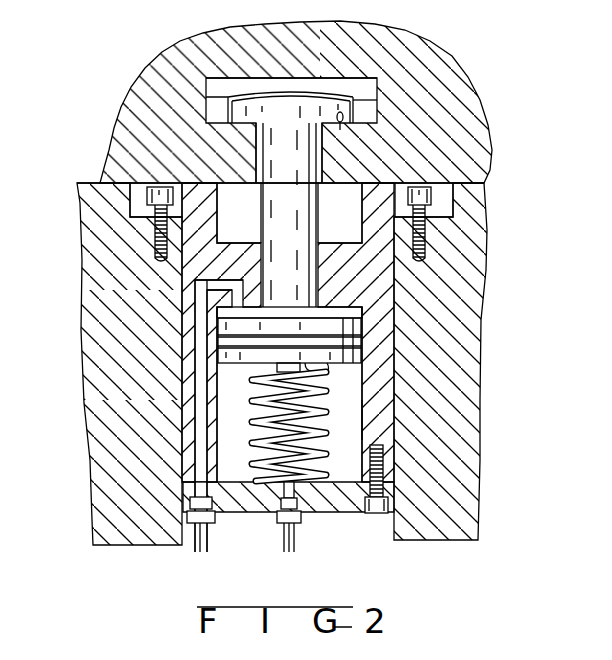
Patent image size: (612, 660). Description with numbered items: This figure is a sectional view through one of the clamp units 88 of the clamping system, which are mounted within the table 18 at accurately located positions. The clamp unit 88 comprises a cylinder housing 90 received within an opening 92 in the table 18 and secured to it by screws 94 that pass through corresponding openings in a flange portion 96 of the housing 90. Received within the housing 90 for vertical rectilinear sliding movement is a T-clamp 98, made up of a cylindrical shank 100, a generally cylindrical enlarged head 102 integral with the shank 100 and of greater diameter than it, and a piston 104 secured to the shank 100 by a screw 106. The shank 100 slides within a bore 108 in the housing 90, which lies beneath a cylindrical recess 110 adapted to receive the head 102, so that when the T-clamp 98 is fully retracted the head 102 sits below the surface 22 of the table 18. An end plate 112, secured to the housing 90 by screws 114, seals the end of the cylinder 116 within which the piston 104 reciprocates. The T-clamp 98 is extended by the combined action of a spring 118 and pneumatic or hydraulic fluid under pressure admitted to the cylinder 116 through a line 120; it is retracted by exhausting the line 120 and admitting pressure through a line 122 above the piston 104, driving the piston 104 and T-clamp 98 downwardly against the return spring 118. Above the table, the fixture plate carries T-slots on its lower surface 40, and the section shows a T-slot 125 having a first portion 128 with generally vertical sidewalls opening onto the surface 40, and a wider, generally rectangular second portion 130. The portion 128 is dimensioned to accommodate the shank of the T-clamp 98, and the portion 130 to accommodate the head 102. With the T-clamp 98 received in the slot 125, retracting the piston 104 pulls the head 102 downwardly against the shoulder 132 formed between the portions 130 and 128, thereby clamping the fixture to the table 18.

The table 18 is at (87, 365).
The surface of table 22 is at (483, 185).
The lower surface of fixture plate 40 is at (112, 187).
The clamp unit 88 is at (388, 177).
The cylinder housing 90 is at (385, 362).
The opening in table 92 is at (389, 419).
The screws 94 is at (158, 193).
The flange portion of housing 96 is at (134, 198).
The T-clamp 98 is at (322, 157).
The cylindrical shank 100 is at (280, 232).
The enlarged head 102 is at (323, 107).
The piston 104 is at (366, 330).
The screw 106 is at (217, 375).
The bore 108 is at (311, 274).
The cylindrical recess 110 is at (222, 193).
The end plate 112 is at (243, 487).
The screws 114 is at (377, 507).
The cylinder 116 is at (356, 420).
The return spring 118 is at (310, 437).
The line 120 is at (292, 532).
The line 122 is at (200, 450).
The T-slot 125 is at (367, 100).
The first portion of T-slot 128 is at (260, 148).
The second portion of T-slot 130 is at (212, 98).
The shoulder 132 is at (340, 114).